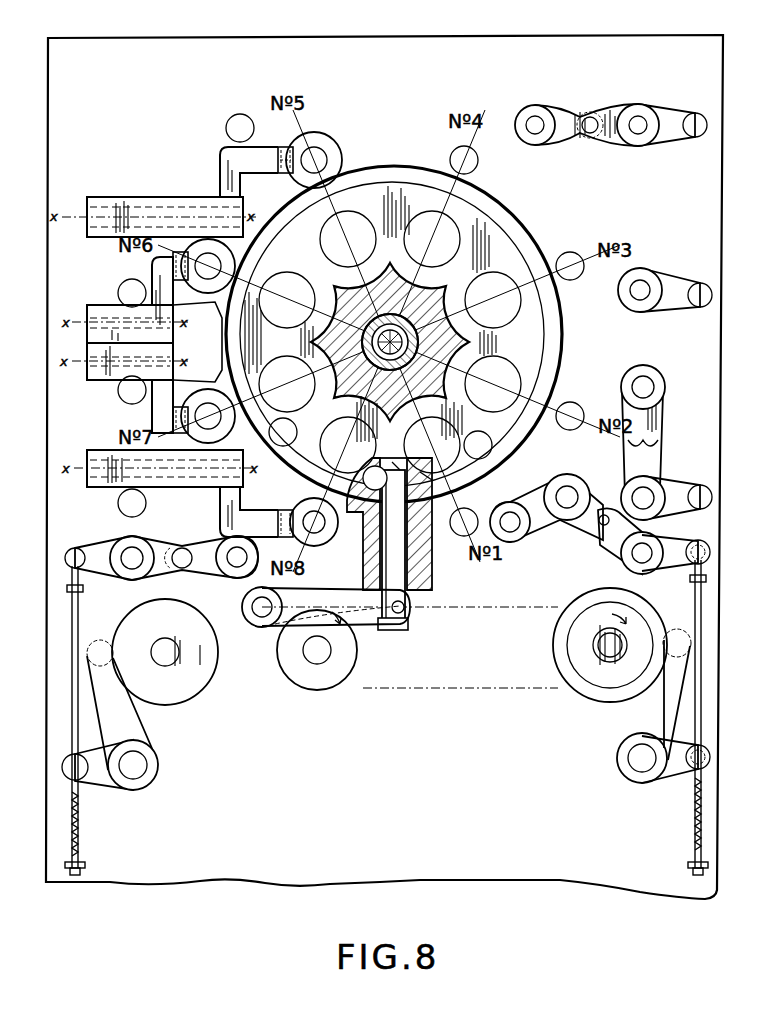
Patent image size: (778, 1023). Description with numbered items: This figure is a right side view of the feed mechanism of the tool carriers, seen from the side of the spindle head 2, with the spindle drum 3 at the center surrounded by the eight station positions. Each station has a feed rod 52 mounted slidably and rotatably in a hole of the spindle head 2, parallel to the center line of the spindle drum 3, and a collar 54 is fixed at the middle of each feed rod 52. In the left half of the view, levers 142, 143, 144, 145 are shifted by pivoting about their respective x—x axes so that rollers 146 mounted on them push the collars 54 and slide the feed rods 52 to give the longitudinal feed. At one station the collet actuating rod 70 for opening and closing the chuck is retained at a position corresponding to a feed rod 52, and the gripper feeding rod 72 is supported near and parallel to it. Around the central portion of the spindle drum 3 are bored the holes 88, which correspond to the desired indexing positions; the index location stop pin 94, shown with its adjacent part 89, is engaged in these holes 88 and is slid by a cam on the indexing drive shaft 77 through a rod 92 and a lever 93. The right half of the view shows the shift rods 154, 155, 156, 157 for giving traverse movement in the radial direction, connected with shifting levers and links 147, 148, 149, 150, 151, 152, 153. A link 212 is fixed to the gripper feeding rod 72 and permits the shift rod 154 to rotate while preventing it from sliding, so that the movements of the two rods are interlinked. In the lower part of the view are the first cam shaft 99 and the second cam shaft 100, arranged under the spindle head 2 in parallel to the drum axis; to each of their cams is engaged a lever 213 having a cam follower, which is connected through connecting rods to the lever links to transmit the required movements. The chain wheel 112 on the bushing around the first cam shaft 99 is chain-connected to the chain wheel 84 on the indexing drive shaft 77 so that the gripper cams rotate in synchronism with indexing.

The spindle head 2 is at (427, 570).
The spindle drum 3 is at (363, 478).
The feed rod 52 is at (326, 156).
The collar 54 is at (320, 143).
The collet actuating rod 70 is at (458, 535).
The gripper feeding rod 72 is at (510, 542).
The indexing drive shaft 77 is at (308, 660).
The chain wheel 84 is at (323, 688).
The holes 88 is at (404, 475).
The cap portion 89 is at (428, 480).
The rod 92 is at (262, 617).
The lever 93 is at (328, 596).
The index location stop pin 94 is at (410, 622).
The first cam shaft 99 is at (600, 655).
The second cam shaft 100 is at (172, 663).
The chain wheel 112 is at (612, 682).
The lever 142 is at (160, 212).
The lever 143 is at (100, 308).
The bar 144 is at (103, 384).
The lever 145 is at (105, 490).
The roller 146 is at (282, 148).
The shifting lever or link 147 is at (699, 538).
The shifting lever or link 148 is at (680, 490).
The shifting lever or link 149 is at (684, 286).
The shifting lever or link 150 is at (668, 116).
The shifting lever or link 151 is at (629, 541).
The shifting lever or link 152 is at (662, 432).
The shifting lever or link 153 is at (598, 133).
The shift rod 154 is at (568, 492).
The shift rod 155 is at (633, 382).
The shift rod 156 is at (644, 283).
The shift rod 157 is at (536, 118).
The link 212 is at (547, 520).
The lever 213 is at (150, 740).